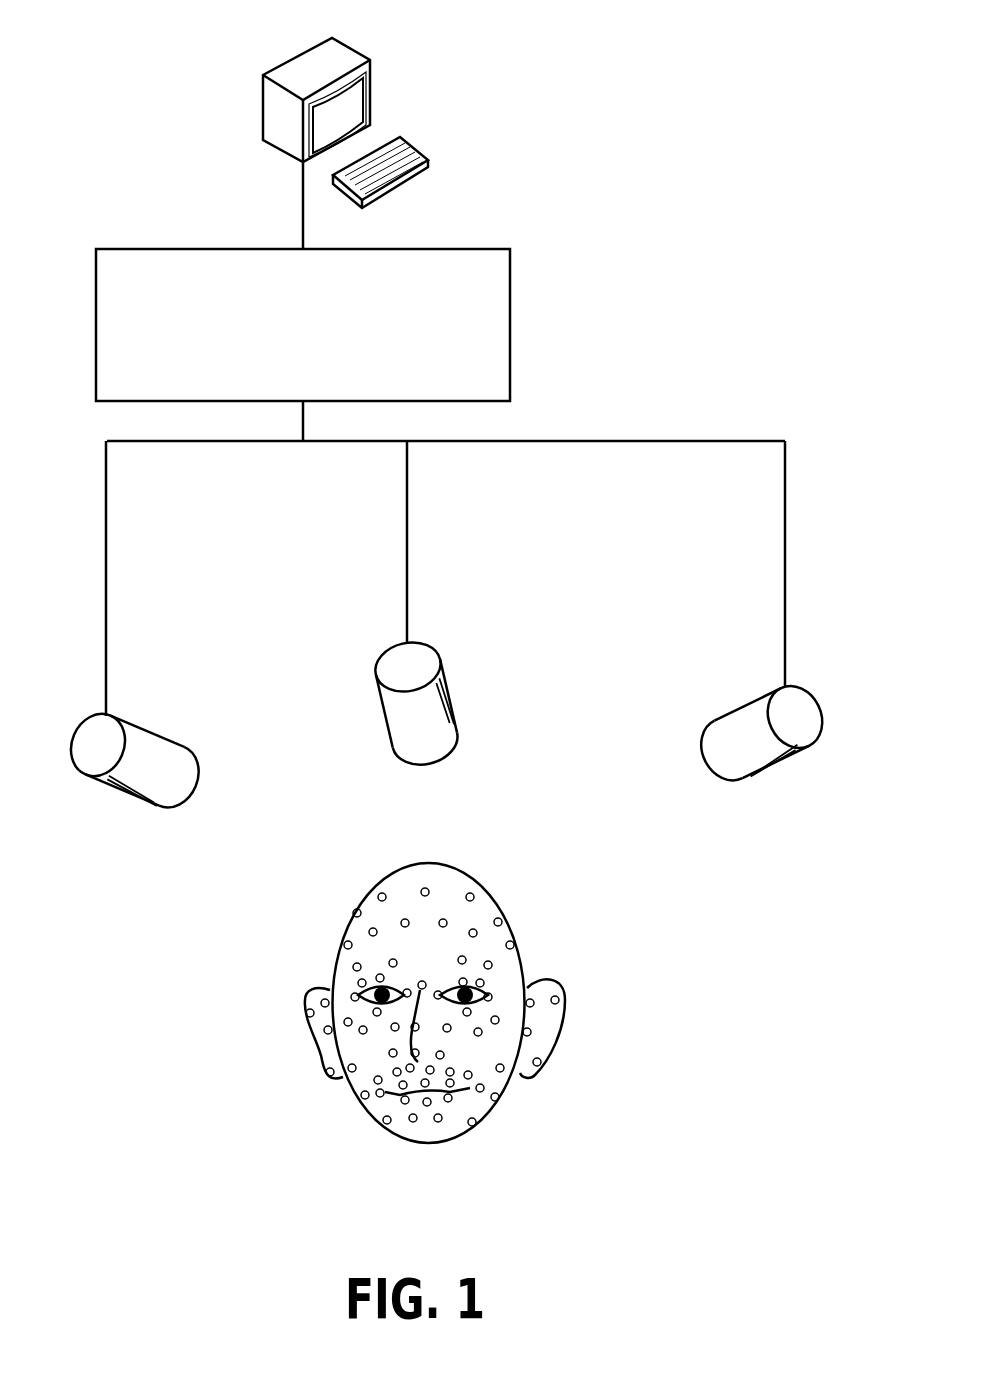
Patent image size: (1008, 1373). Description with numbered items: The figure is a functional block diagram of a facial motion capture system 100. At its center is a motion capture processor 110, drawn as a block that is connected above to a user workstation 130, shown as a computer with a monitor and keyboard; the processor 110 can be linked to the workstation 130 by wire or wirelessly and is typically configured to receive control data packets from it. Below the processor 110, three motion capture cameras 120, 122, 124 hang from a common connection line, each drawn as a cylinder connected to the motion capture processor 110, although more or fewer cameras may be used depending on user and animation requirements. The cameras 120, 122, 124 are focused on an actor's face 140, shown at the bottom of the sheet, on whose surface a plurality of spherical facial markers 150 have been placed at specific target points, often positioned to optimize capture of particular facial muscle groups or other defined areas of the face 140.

The facial motion capture system 100 is at (684, 140).
The motion capture processor 110 is at (440, 345).
The motion capture camera 120 is at (167, 745).
The motion capture camera 122 is at (440, 660).
The motion capture camera 124 is at (753, 702).
The user workstation 130 is at (290, 62).
The actor's face 140 is at (370, 1113).
The facial markers 150 is at (472, 898).